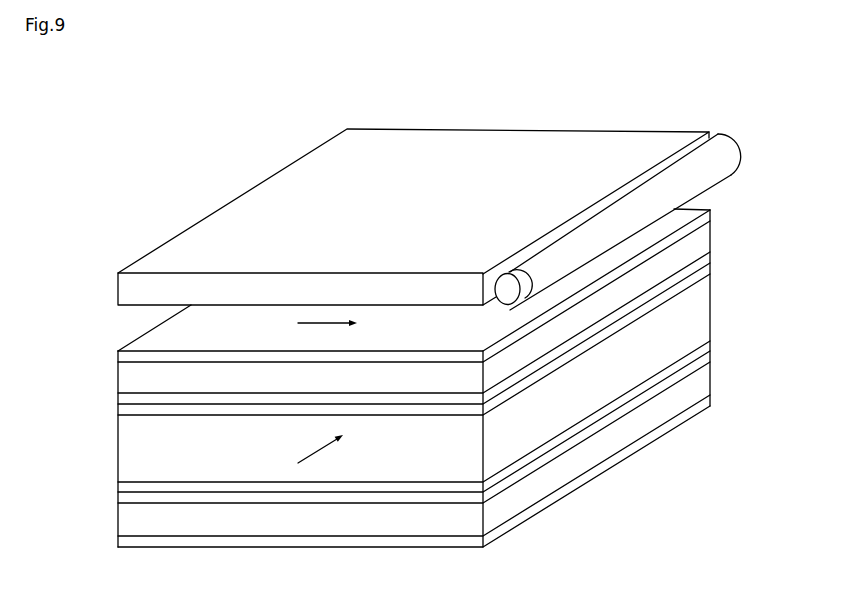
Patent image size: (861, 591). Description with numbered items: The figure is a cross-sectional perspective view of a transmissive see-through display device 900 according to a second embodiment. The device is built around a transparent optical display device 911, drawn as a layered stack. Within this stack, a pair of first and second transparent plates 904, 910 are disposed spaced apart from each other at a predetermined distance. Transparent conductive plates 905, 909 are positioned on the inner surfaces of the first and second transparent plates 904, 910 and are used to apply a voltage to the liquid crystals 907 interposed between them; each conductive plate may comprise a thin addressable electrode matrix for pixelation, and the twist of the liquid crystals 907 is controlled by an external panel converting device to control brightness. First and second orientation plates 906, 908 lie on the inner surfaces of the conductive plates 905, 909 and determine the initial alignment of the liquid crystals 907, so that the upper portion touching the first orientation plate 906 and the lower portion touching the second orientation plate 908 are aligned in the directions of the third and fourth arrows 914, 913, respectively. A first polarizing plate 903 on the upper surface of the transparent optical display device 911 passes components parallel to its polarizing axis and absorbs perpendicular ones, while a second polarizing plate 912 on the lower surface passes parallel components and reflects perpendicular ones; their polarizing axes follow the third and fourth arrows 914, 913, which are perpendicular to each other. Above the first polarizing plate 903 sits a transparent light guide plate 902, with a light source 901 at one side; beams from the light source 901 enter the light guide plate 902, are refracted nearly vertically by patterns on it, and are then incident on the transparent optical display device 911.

The transmissive see-through display device 900 is at (681, 112).
The light source 901 is at (505, 292).
The transparent light guide plate 902 is at (128, 291).
The first polarizing plate 903 is at (710, 216).
The first transparent plate 904 is at (710, 239).
The first transparent conductive plate 905 is at (710, 260).
The first orientation plate 906 is at (708, 270).
The liquid crystals 907 is at (710, 310).
The second orientation plate 908 is at (710, 348).
The second transparent conductive plate 909 is at (710, 358).
The second transparent plate 910 is at (710, 379).
The transparent optical display device 911 is at (783, 212).
The second polarizing plate 912 is at (710, 402).
The fourth arrow 913 is at (313, 452).
The third arrow 914 is at (327, 322).